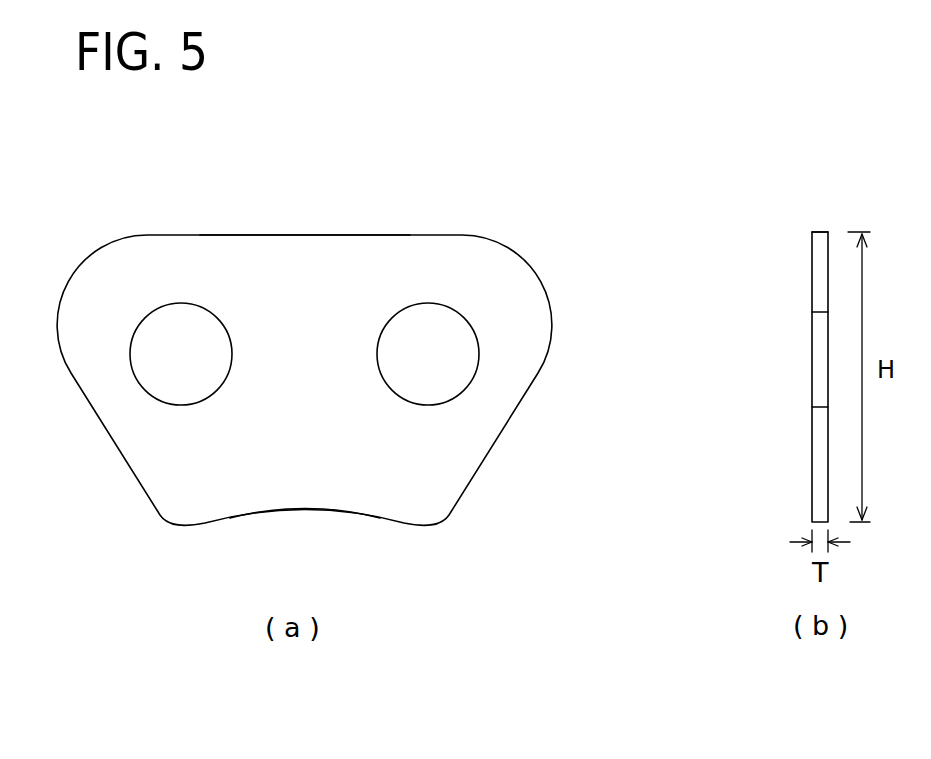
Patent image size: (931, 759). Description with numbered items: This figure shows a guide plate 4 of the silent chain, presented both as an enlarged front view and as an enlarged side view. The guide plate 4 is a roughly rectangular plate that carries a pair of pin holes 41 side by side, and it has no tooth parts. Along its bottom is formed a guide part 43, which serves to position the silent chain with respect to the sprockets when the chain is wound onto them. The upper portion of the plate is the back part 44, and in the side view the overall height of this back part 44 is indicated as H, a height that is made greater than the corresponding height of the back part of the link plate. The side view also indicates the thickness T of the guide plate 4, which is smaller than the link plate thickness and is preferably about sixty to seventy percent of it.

The guide plate 4 is at (362, 166).
The pin hole 41 is at (132, 360).
The guide part 43 is at (312, 506).
The back part 44 is at (280, 235).